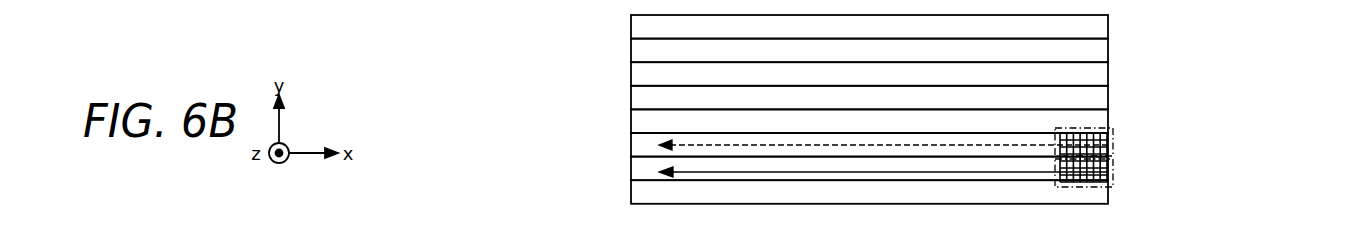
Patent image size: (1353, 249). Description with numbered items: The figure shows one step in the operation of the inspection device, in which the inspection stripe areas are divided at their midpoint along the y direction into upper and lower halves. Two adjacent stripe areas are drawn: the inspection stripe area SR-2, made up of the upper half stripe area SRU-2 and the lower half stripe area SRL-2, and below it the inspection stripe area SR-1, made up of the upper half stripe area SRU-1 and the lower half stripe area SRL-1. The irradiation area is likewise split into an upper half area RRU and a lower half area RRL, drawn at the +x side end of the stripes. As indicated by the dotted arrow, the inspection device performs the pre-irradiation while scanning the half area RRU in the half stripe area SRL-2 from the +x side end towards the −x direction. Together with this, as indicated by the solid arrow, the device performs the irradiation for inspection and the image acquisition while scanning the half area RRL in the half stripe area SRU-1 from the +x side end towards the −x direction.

The inspection stripe area SR-2 is at (508, 82).
The half stripe area SRU-2 is at (619, 115).
The half stripe area SRL-2 is at (619, 141).
The inspection stripe area SR-1 is at (508, 157).
The half stripe area SRU-1 is at (619, 174).
The half stripe area SRL-1 is at (619, 206).
The half area of the irradiation area RRU is at (1113, 132).
The half area of the irradiation area RRL is at (1113, 177).